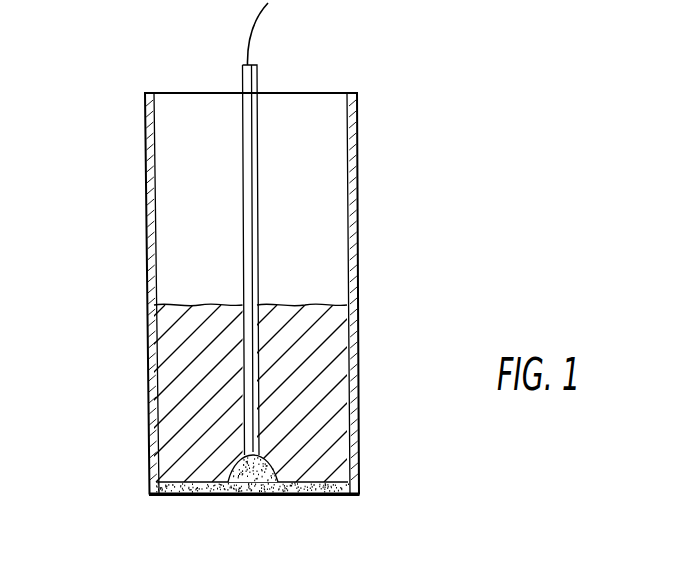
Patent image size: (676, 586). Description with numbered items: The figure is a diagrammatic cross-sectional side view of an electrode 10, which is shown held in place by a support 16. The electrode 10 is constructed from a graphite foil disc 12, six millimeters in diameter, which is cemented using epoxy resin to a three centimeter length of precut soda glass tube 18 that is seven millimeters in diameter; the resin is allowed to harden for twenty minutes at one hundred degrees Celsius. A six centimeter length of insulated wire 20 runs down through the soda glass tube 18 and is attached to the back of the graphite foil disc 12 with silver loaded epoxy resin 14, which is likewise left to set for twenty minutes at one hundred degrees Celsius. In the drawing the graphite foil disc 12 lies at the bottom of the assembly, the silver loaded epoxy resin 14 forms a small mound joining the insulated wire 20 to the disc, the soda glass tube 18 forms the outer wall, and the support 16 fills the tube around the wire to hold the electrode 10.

The electrode 10 is at (138, 262).
The graphite foil disc 12 is at (215, 498).
The silver loaded epoxy resin 14 is at (277, 483).
The support 16 is at (334, 340).
The soda glass tube 18 is at (357, 217).
The insulated wire 20 is at (257, 160).